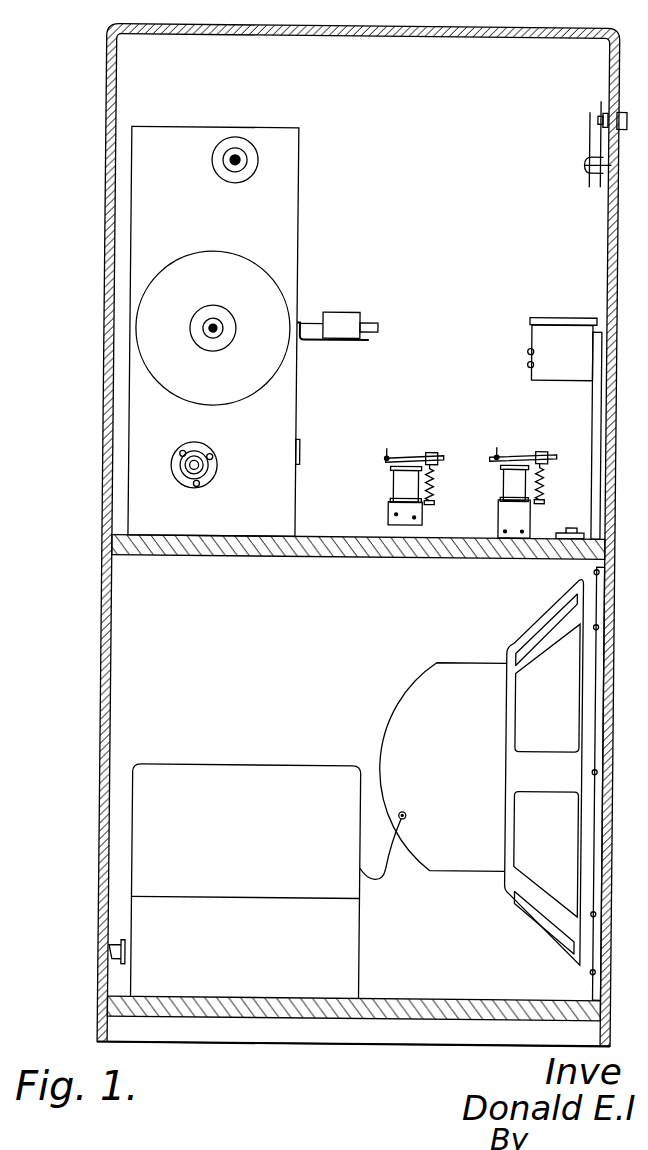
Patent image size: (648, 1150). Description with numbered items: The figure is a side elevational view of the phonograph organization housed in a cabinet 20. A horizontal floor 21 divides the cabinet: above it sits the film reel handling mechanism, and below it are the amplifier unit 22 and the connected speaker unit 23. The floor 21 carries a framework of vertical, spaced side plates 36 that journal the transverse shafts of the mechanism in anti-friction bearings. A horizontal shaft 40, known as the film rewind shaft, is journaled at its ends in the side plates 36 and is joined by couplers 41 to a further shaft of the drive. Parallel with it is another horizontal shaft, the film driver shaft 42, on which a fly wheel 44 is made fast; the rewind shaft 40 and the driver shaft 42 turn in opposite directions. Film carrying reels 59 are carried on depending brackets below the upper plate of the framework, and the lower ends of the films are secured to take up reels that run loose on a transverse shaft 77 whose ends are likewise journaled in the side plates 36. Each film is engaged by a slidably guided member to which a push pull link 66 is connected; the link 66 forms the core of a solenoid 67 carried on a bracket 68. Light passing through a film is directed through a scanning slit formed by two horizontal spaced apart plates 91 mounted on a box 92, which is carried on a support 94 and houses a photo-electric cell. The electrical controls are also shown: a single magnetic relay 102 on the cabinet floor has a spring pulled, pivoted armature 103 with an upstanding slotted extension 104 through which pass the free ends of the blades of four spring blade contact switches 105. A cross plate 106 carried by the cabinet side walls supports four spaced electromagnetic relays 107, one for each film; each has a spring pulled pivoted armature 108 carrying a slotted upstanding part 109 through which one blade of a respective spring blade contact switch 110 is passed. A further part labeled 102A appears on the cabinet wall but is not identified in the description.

The cabinet 20 is at (104, 59).
The horizontal floor 21 is at (372, 557).
The amplifier unit 22 is at (262, 766).
The speaker unit 23 is at (410, 698).
The side plates 36 is at (165, 130).
The film rewind shaft 40 is at (234, 161).
The couplers 41 is at (254, 161).
The film driver shaft 42 is at (211, 333).
The fly wheel 44 is at (229, 259).
The film carrying reel 59 is at (218, 480).
The push pull link 66 is at (308, 322).
The solenoid 67 is at (348, 312).
The bracket 68 is at (326, 340).
The take-up reel shaft 77 is at (209, 464).
The plates 91 is at (530, 354).
The box 92 is at (561, 316).
The support 94 is at (596, 402).
The magnetic relay 102 is at (508, 489).
The terminal bolt assembly 102A is at (584, 141).
The armature 103 is at (494, 457).
The slotted extension 104 is at (489, 455).
The spring blade contact switches 105 is at (524, 454).
The cross plate 106 is at (390, 505).
The electromagnetic relays 107 is at (397, 485).
The armature 108 is at (391, 462).
The slotted upstanding part 109 is at (385, 453).
The spring blade contact switch 110 is at (399, 457).